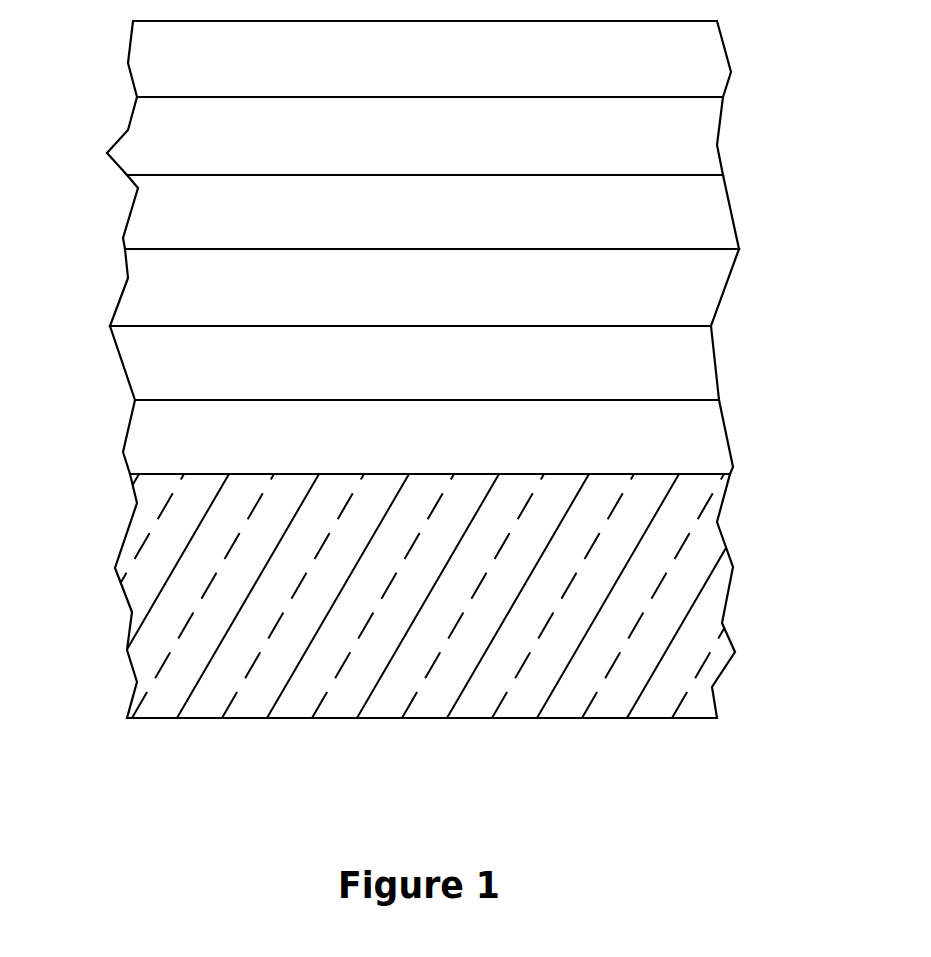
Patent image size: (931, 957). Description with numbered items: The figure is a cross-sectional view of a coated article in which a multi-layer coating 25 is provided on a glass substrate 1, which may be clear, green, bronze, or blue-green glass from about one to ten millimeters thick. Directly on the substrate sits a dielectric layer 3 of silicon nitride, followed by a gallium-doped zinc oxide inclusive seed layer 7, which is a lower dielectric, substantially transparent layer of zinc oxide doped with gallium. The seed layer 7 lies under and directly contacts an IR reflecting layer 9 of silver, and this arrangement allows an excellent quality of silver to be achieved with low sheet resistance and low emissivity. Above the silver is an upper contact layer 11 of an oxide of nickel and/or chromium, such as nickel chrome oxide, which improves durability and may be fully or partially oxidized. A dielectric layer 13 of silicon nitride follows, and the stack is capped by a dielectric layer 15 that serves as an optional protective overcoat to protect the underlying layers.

The glass substrate 1 is at (700, 608).
The dielectric layer 3 is at (692, 440).
The gallium-doped zinc oxide inclusive seed layer 7 is at (692, 364).
The IR reflecting layer 9 is at (692, 288).
The upper contact layer 11 is at (692, 214).
The dielectric layer 13 is at (692, 138).
The dielectric layer 15 is at (692, 60).
The coating 25 is at (118, 473).